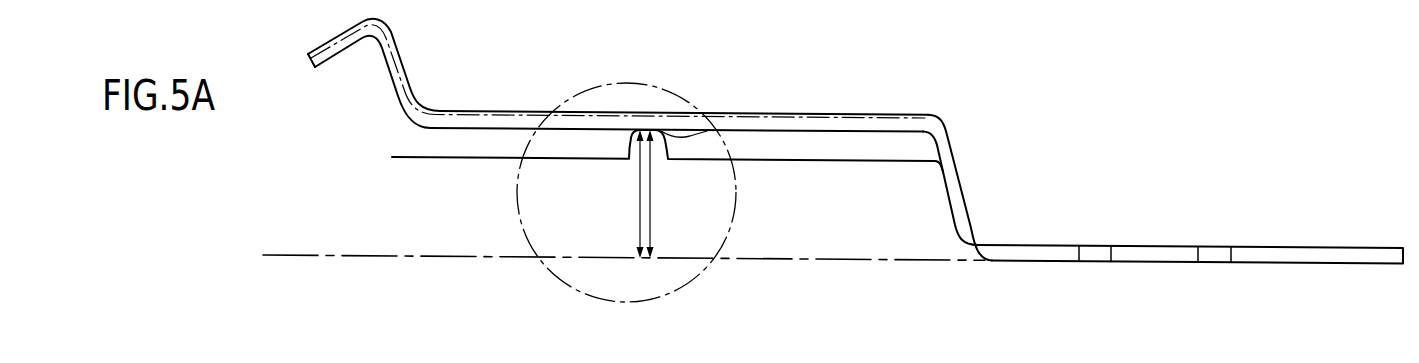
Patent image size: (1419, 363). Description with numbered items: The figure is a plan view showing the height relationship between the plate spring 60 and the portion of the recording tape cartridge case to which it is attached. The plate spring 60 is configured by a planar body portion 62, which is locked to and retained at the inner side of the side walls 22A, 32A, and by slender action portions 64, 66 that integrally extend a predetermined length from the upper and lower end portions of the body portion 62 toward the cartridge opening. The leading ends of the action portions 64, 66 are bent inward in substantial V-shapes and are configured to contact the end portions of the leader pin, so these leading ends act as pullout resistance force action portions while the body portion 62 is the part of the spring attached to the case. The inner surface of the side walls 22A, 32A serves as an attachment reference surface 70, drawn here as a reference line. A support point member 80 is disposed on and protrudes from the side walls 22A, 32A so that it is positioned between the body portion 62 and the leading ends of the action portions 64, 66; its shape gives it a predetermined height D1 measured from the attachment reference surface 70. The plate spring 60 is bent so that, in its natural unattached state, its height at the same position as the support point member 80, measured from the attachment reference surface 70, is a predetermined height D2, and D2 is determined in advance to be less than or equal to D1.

The side wall 22A is at (585, 154).
The side wall 32A is at (430, 157).
The plate spring 60 is at (958, 162).
The body portion 62 is at (1292, 245).
The action portion 64 is at (618, 75).
The action portion 66 is at (472, 111).
The attachment reference surface 70 is at (877, 259).
The support point member 80 is at (707, 131).
The height of support point member D1 is at (651, 205).
The height of plate spring D2 is at (638, 197).